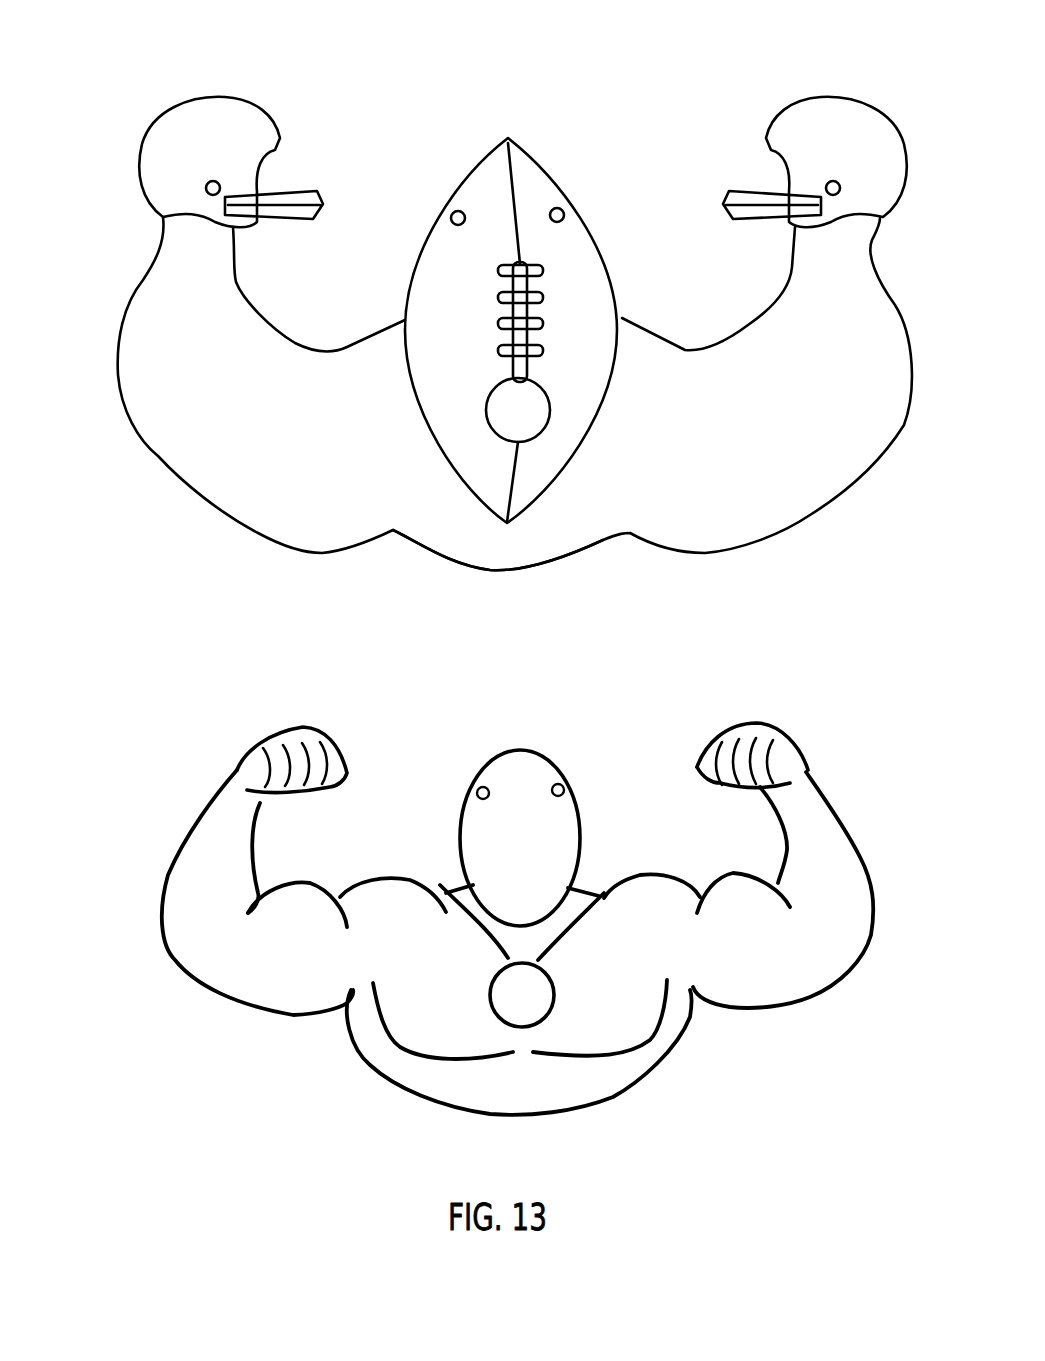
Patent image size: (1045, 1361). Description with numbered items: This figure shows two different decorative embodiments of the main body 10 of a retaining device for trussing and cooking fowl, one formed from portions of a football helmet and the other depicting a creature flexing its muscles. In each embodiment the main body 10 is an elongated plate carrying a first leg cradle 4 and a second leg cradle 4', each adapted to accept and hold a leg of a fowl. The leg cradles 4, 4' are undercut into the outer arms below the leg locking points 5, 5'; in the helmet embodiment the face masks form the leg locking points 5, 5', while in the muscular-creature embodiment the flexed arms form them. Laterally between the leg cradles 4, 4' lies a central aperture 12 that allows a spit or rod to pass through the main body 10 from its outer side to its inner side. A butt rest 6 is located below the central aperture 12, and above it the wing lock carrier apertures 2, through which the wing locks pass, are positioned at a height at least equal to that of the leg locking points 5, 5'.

The wing lock carrier aperture 2 is at (556, 210).
The first leg cradle 4 is at (238, 637).
The second leg cradle 4' is at (774, 659).
The leg locking point 5 is at (284, 408).
The leg locking point 5' is at (766, 405).
The butt rest 6 is at (470, 577).
The main body 10 is at (150, 505).
The central aperture 12 is at (525, 420).